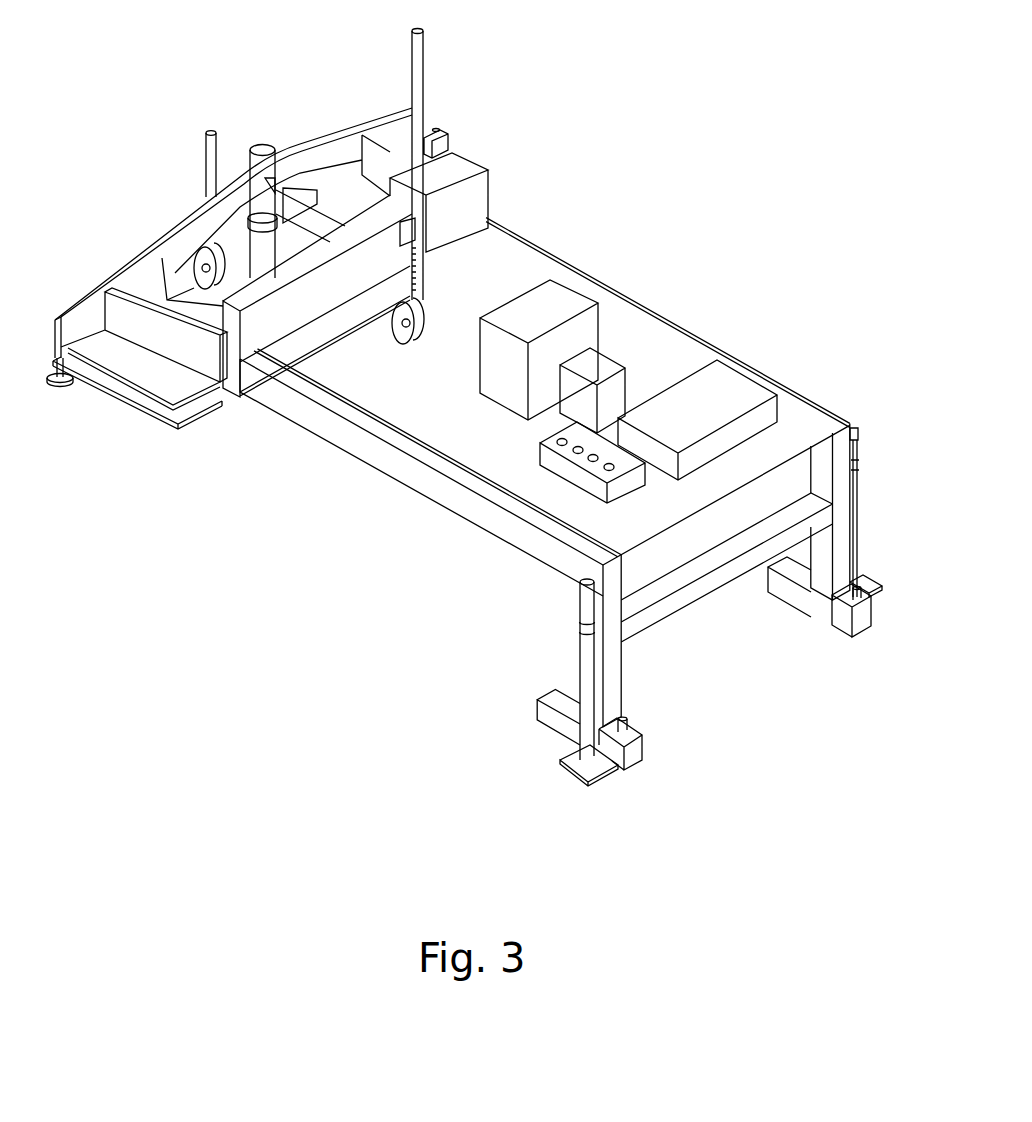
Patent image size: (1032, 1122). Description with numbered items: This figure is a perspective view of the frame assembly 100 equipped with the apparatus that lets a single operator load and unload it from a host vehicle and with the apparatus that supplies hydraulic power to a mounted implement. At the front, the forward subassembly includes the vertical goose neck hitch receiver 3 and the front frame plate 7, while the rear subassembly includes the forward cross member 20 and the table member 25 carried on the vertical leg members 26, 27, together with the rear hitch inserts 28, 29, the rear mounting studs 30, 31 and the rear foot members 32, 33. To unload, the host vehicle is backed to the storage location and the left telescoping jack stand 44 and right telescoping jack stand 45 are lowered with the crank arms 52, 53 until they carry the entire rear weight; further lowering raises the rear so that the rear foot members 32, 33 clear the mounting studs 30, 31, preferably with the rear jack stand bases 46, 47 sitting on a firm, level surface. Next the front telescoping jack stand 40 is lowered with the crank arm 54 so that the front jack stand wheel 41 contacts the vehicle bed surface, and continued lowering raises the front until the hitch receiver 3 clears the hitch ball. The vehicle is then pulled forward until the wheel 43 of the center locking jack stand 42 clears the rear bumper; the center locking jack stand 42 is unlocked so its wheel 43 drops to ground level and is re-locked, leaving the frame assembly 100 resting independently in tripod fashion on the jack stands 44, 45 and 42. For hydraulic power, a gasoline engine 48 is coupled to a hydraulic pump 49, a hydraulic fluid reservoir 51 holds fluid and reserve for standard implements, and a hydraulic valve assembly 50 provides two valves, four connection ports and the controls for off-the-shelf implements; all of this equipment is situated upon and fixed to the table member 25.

The frame assembly 100 is at (615, 211).
The vertical goose neck hitch receiver 3 is at (260, 250).
The front frame plate 7 is at (190, 233).
The forward cross member 20 is at (463, 178).
The table member 25 is at (661, 345).
The vertical leg member 26 is at (628, 656).
The vertical leg member 27 is at (838, 462).
The rear hitch insert 28 is at (545, 695).
The rear hitch insert 29 is at (793, 602).
The rear mounting stud 30 is at (636, 718).
The rear mounting stud 31 is at (856, 613).
The rear foot member 32 is at (647, 738).
The rear foot member 33 is at (845, 610).
The front telescoping jack stand 40 is at (208, 156).
The front jack stand wheel 41 is at (200, 268).
The center locking jack stand 42 is at (443, 137).
The center locking jack stand wheel 43 is at (402, 344).
The left telescoping jack stand 44 is at (590, 605).
The right telescoping jack stand 45 is at (858, 500).
The rear jack stand base 46 is at (583, 759).
The rear jack stand base 47 is at (862, 578).
The gasoline engine 48 is at (560, 303).
The hydraulic pump 49 is at (590, 370).
The hydraulic valve assembly 50 is at (578, 455).
The hydraulic fluid reservoir 51 is at (712, 400).
The crank arm 52 is at (575, 628).
The crank arm 53 is at (858, 468).
The crank arm 54 is at (197, 173).